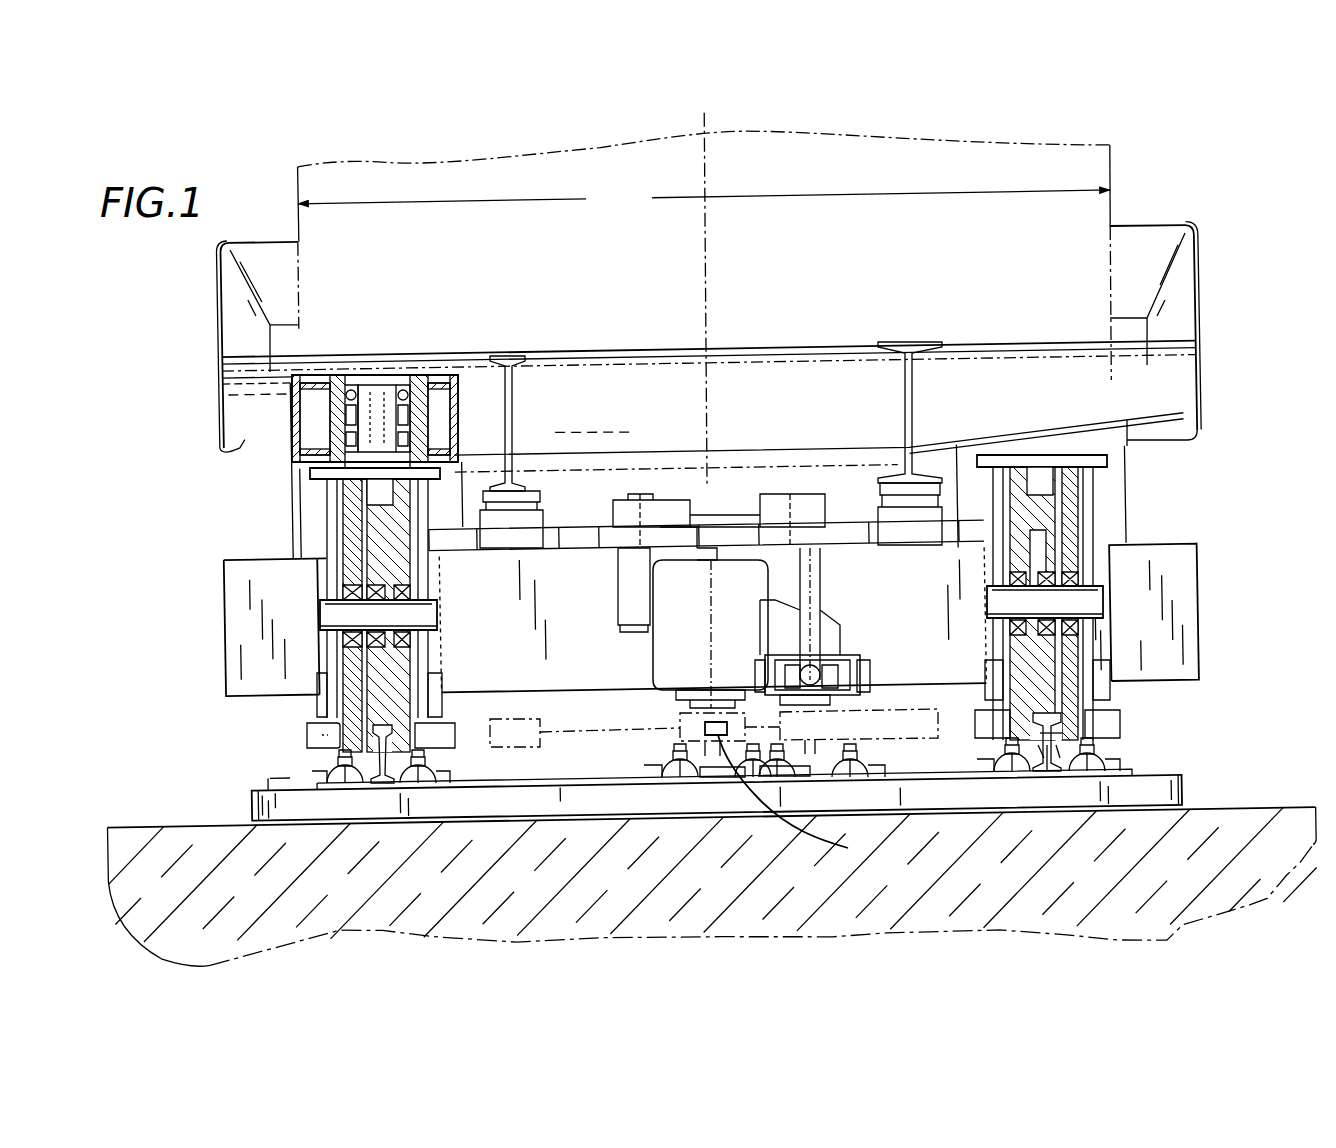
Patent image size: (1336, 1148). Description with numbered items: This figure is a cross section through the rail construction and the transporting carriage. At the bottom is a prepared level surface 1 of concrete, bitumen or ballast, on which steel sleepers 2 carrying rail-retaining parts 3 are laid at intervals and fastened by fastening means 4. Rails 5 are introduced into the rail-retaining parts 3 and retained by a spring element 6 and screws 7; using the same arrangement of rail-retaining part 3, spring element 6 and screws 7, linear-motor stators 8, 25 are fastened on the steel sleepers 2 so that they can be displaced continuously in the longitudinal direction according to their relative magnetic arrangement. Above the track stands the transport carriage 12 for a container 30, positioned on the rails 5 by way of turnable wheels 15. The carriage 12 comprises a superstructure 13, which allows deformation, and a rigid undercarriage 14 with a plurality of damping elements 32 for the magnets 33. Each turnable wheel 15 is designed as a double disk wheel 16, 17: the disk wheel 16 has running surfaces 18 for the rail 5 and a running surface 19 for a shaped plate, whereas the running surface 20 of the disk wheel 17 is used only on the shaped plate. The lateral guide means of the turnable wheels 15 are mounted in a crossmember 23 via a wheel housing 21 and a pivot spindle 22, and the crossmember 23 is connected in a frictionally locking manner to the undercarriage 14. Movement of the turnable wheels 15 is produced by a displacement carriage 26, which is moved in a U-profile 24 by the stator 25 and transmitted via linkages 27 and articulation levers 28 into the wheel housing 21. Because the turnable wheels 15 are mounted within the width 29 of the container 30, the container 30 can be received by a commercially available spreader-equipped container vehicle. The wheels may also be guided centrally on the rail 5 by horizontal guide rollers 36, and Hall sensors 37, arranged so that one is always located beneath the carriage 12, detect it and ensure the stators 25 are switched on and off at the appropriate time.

The prepared level surface 1 is at (1237, 832).
The steel sleeper 2 is at (258, 812).
The rail-retaining part 3 is at (322, 787).
The fastening means 4 is at (268, 794).
The rail 5 is at (1055, 730).
The spring element 6 is at (672, 772).
The screw 7 is at (680, 752).
The linear-motor stator 8 is at (545, 740).
The transport carriage 12 is at (758, 302).
The superstructure 13 is at (1208, 290).
The rigid undercarriage 14 is at (720, 532).
The turnable wheel 15 is at (306, 543).
The disk wheel 16 is at (1135, 576).
The disk wheel 17 is at (1067, 565).
The running surface 18 is at (1048, 748).
The running surface 19 is at (1040, 748).
The running surface 20 is at (1060, 748).
The wheel housing 21 is at (335, 505).
The pivot spindle 22 is at (372, 398).
The crossmember 23 is at (380, 374).
The U-profile 24 is at (832, 678).
The linear-motor stator 25 is at (830, 718).
The displacement carriage 26 is at (862, 676).
The linkage 27 is at (813, 628).
The articulation lever 28 is at (700, 515).
The width 29 is at (704, 198).
The container 30 is at (1048, 158).
The damping element 32 is at (884, 478).
The magnet 33 is at (705, 738).
The horizontal guide roller 36 is at (322, 742).
The sensor 37 is at (796, 801).